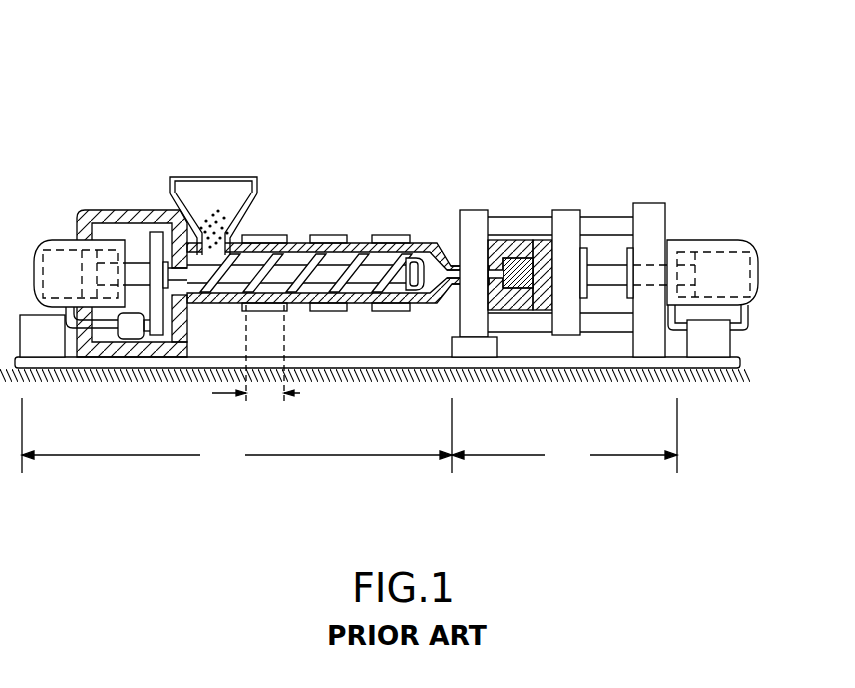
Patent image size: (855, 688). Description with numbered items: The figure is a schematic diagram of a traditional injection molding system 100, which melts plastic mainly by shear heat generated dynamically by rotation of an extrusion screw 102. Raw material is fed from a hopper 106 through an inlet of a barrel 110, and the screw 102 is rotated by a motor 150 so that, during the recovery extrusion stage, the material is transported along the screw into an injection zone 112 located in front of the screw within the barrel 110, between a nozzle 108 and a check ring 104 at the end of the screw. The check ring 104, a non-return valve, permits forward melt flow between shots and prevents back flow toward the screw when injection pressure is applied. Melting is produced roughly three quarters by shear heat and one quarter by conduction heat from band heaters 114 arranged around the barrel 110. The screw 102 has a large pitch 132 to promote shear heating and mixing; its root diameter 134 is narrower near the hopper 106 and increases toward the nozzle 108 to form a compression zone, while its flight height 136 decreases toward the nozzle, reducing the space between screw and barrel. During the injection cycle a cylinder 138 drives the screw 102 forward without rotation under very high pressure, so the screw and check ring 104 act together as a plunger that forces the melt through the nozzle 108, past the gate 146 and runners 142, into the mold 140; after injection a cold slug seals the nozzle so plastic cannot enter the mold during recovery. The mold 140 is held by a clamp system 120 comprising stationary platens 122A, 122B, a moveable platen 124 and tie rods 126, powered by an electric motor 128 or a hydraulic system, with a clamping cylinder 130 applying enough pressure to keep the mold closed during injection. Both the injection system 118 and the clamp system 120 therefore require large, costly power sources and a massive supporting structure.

The traditional injection molding system 100 is at (75, 83).
The extrusion screw 102 is at (393, 296).
The check ring 104 is at (409, 257).
The hopper 106 is at (218, 185).
The nozzle 108 is at (464, 210).
The barrel 110 is at (431, 258).
The injection zone 112 is at (440, 284).
The band heaters 114 is at (328, 240).
The injection system 118 is at (237, 435).
The clamp system 120 is at (564, 435).
The stationary platen 122A is at (484, 222).
The stationary platen 122B is at (658, 215).
The moveable platen 124 is at (569, 222).
The tie rods 126 is at (609, 220).
The electric motor 128 is at (742, 276).
The clamping cylinder 130 is at (672, 278).
The pitch 132 is at (239, 355).
The root diameter 134 is at (362, 266).
The flight height 136 is at (277, 262).
The cylinder 138 is at (139, 277).
The mold 140 is at (527, 290).
The runners 142 is at (515, 288).
The gate 146 is at (497, 275).
The motor 150 is at (123, 328).